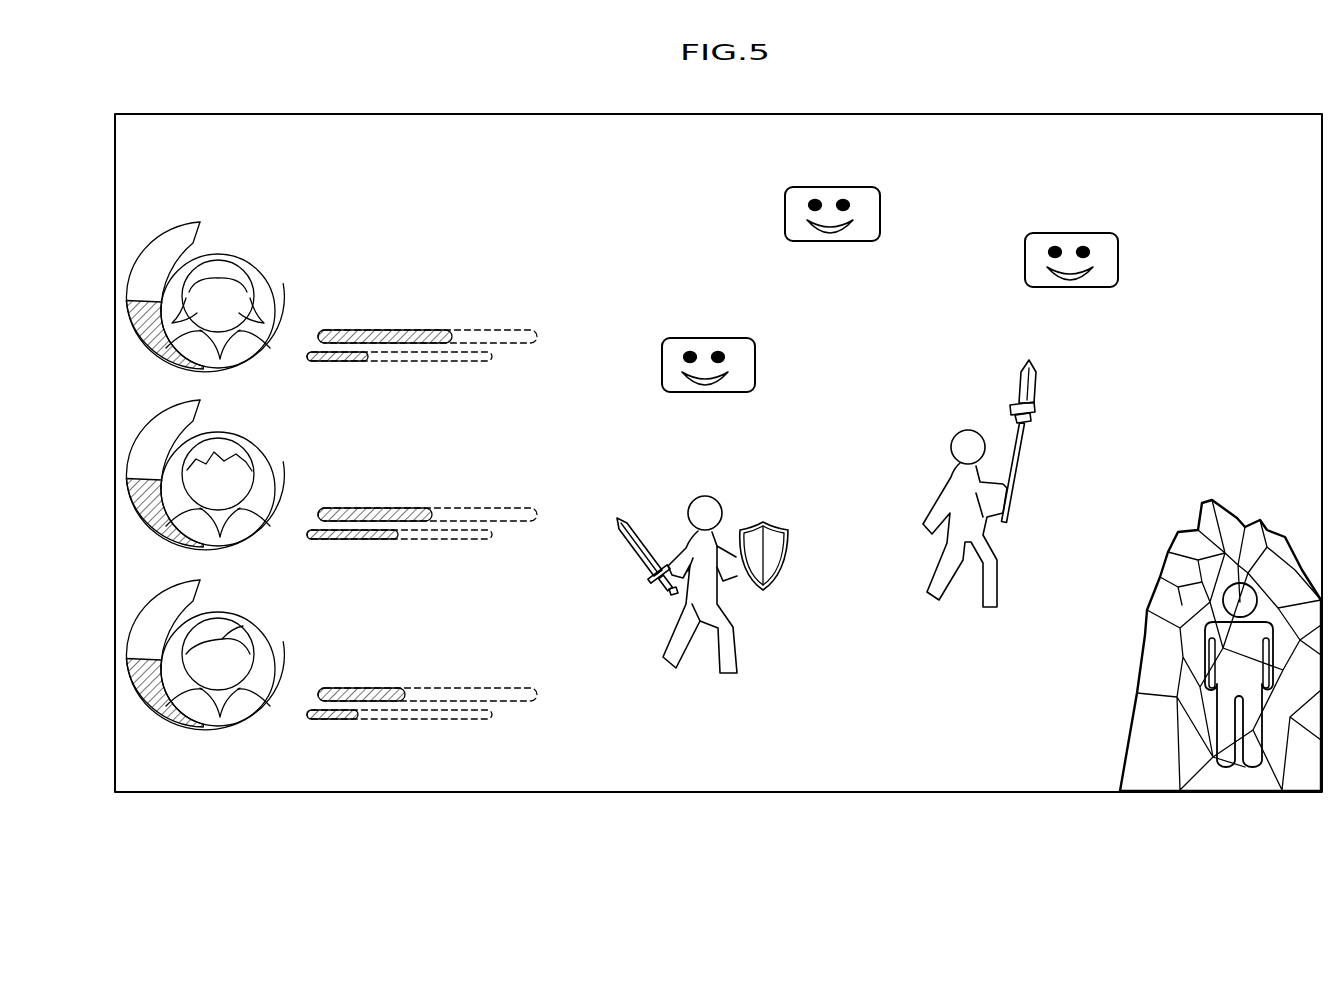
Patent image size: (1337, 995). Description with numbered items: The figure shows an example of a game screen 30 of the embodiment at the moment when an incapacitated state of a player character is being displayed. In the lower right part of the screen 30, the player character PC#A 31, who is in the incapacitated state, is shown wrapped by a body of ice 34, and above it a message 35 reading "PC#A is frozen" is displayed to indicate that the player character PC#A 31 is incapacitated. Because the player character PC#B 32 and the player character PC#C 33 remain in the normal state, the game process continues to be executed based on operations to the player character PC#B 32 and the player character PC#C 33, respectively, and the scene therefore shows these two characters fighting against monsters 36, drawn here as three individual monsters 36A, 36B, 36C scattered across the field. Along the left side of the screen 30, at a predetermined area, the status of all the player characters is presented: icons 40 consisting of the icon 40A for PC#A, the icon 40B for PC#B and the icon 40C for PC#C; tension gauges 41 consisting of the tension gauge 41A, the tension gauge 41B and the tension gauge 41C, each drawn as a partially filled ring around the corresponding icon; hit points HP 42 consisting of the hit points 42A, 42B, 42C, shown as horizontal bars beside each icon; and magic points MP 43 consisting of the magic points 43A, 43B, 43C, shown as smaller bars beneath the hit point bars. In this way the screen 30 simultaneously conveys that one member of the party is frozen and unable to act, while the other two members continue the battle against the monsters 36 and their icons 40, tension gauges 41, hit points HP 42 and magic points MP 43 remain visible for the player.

The screen 30 is at (1248, 114).
The player character PC#A 31 is at (1227, 768).
The player character PC#B 32 is at (705, 495).
The player character PC#C 33 is at (968, 430).
The body of ice 34 is at (1147, 633).
The message 35 is at (1240, 450).
The monsters 36 is at (1159, 191).
The monster 36A is at (855, 187).
The monster 36B is at (732, 338).
The monster 36C is at (1093, 233).
The icons 40 is at (305, 222).
The icon 40A is at (247, 262).
The icon 40B is at (258, 479).
The icon 40C is at (258, 659).
The tension gauges 41 is at (242, 182).
The tension gauge 41A is at (192, 220).
The tension gauge 41B is at (205, 462).
The tension gauge 41C is at (205, 642).
The hit points HP 42 is at (491, 288).
The hit points HP 42A is at (420, 330).
The hit points HP 42B is at (411, 504).
The hit points HP 42C is at (411, 684).
The magic points MP 43 is at (491, 402).
The magic points MP 43A is at (420, 361).
The magic points MP 43B is at (381, 544).
The magic points MP 43C is at (381, 724).